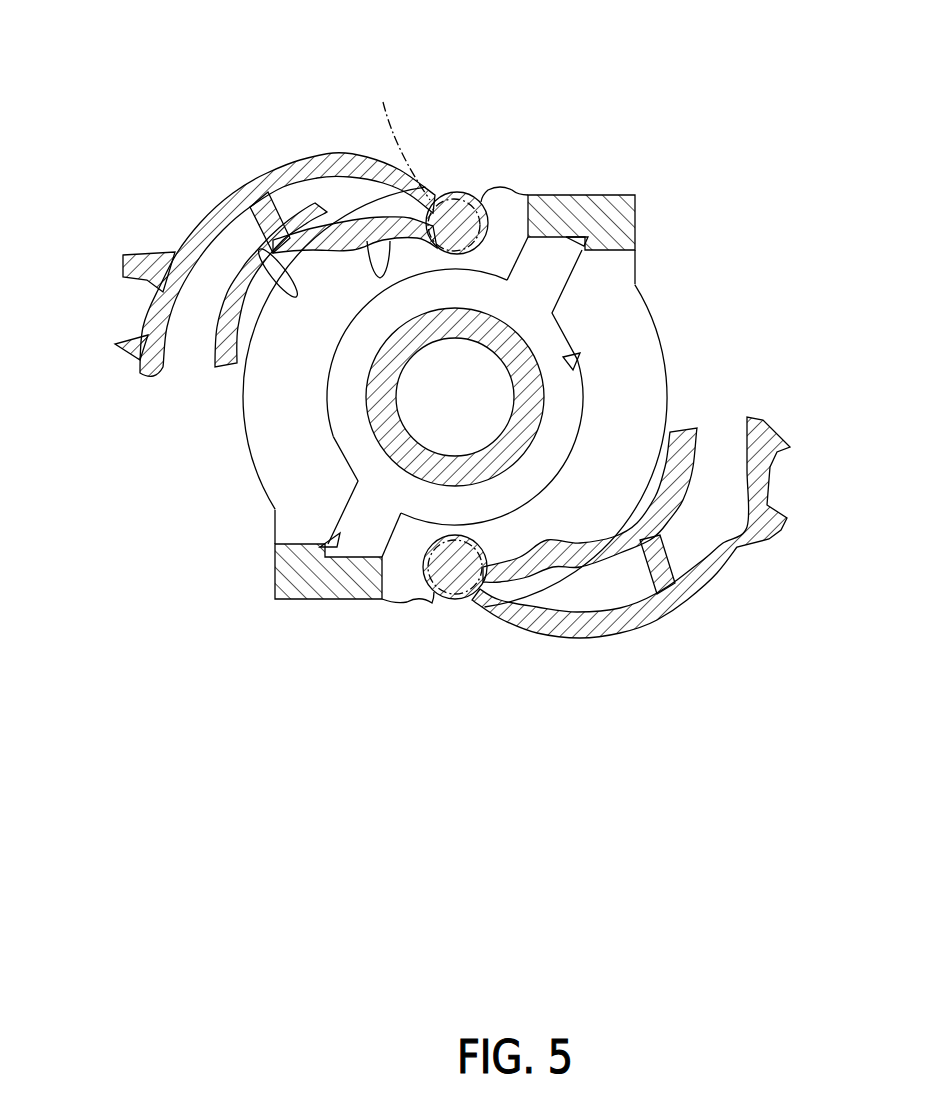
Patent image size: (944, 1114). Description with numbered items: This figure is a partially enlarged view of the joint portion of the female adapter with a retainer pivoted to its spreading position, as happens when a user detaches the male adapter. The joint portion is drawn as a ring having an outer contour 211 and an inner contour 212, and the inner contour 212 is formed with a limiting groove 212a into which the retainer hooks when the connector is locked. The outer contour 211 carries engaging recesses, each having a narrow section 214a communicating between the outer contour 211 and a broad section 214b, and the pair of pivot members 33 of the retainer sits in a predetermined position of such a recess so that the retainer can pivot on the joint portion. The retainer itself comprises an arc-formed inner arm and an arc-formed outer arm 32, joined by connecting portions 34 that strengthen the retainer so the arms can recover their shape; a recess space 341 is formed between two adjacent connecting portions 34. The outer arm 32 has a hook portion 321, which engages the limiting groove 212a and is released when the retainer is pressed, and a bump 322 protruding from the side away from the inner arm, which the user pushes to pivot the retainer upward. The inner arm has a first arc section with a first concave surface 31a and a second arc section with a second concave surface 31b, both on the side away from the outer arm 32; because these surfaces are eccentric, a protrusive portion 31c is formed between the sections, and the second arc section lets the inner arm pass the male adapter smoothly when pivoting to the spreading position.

The outer contour 211 is at (240, 422).
The inner contour 212 is at (578, 353).
The limiting groove 212a is at (586, 238).
The narrow section 214a is at (480, 193).
The broad section 214b is at (520, 188).
The first concave surface 31a is at (290, 245).
The second concave surface 31b is at (378, 258).
The protrusive portion 31c is at (333, 240).
The outer arm 32 is at (277, 173).
The hook portion 321 is at (130, 352).
The bump 322 is at (128, 253).
The pivot member 33 is at (398, 134).
The connecting portion 34 is at (680, 567).
The recess space 341 is at (633, 587).